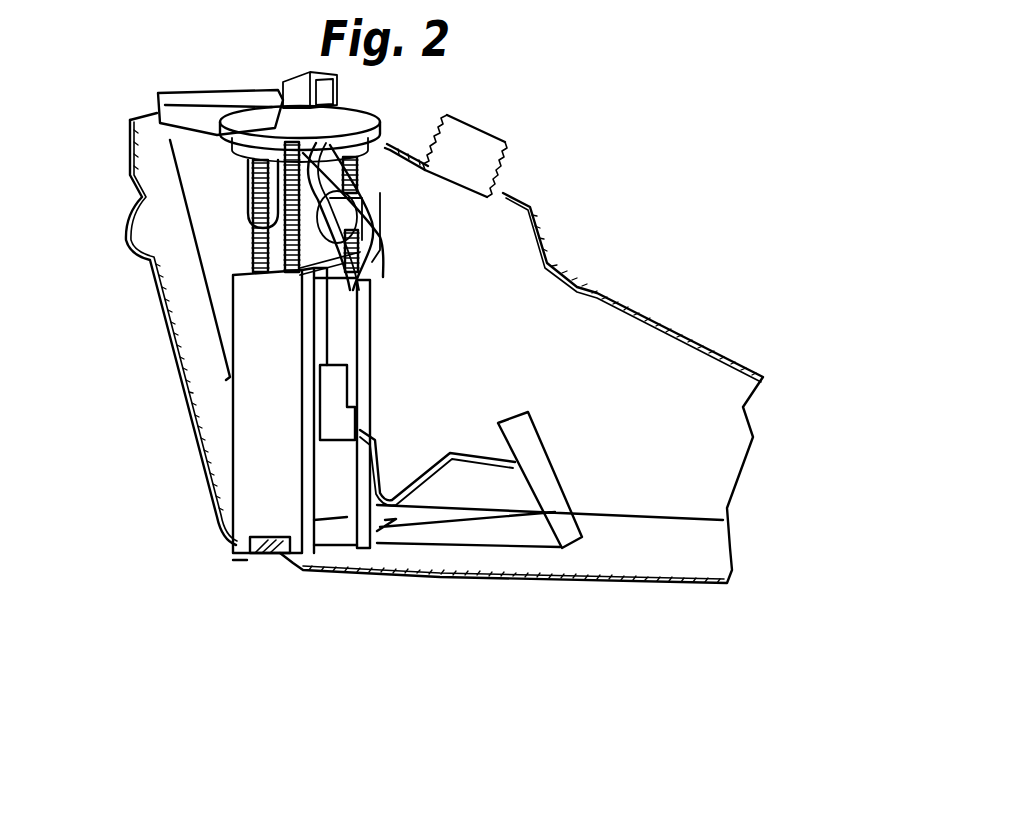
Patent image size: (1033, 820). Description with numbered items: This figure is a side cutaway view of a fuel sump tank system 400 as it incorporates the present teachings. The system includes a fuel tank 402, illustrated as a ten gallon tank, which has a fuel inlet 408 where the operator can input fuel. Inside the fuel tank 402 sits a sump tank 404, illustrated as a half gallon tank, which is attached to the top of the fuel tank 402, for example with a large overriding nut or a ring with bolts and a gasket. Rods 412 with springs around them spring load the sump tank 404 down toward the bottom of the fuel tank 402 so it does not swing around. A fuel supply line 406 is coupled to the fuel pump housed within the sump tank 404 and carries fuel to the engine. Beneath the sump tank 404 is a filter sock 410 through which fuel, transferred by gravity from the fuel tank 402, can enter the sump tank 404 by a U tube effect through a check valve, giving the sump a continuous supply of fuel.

The fuel sump tank system 400 is at (616, 165).
The fuel tank 402 is at (645, 310).
The sump tank 404 is at (292, 372).
The fuel supply line 406 is at (258, 200).
The fuel inlet 408 is at (505, 142).
The filter sock 410 is at (265, 550).
The rods 412 is at (390, 150).